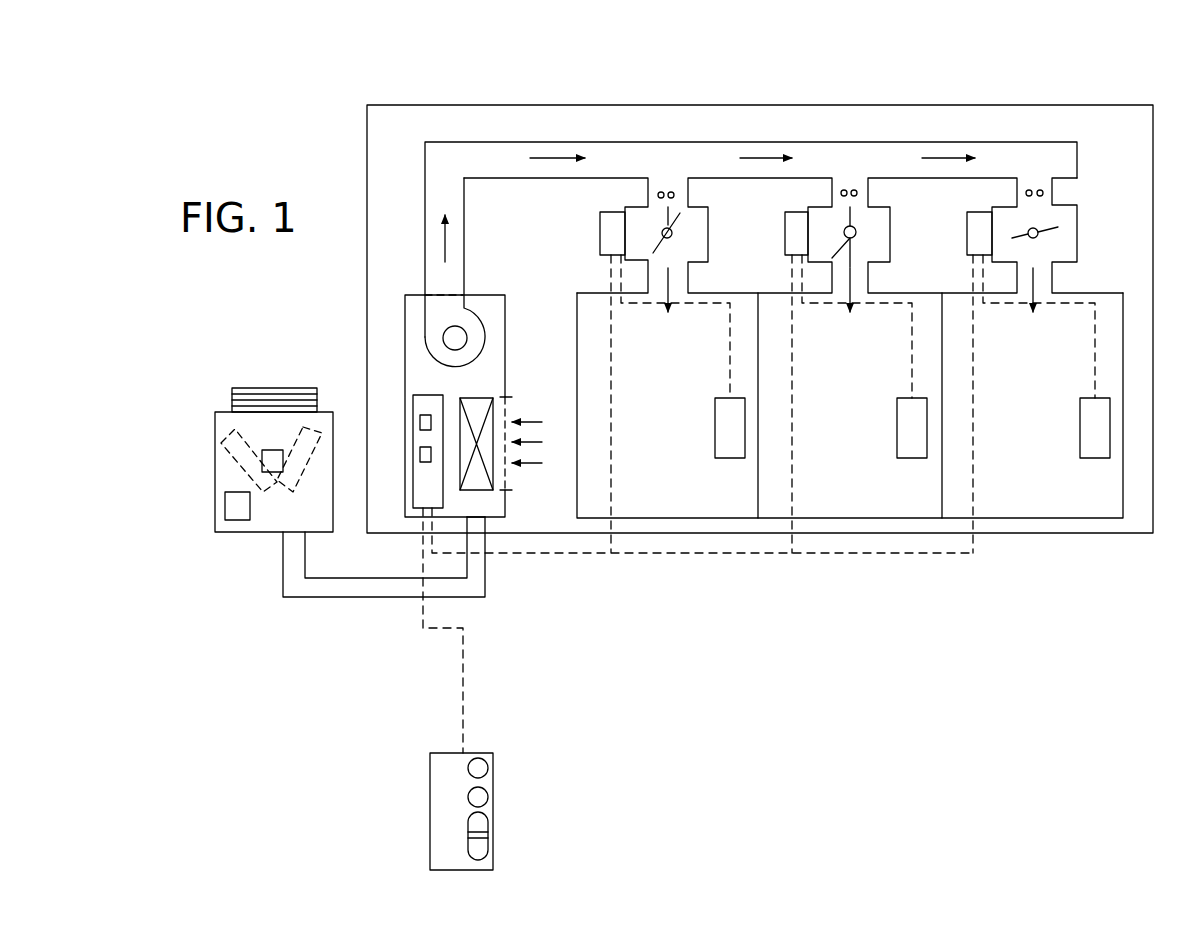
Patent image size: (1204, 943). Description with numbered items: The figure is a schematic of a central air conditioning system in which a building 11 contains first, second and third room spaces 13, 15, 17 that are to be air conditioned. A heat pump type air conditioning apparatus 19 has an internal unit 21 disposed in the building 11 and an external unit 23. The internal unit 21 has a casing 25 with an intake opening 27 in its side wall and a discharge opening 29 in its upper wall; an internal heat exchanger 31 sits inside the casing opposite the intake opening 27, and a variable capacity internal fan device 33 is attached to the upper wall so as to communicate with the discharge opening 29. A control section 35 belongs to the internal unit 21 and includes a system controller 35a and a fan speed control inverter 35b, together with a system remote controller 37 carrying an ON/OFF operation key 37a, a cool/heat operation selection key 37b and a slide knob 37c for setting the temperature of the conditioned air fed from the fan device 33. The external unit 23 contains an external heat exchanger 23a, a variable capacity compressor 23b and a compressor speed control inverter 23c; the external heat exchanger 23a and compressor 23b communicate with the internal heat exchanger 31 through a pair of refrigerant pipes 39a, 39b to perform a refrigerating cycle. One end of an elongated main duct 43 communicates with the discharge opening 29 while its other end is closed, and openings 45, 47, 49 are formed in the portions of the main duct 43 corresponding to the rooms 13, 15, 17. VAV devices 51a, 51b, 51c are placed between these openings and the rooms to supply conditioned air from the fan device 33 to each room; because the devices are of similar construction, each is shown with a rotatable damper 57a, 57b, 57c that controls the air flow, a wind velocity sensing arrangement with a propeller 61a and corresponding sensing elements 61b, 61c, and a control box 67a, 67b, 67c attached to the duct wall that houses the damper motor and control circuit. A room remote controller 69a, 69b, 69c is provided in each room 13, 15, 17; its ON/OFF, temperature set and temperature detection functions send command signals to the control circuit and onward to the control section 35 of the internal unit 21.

The building 11 is at (770, 105).
The first room space 13 is at (693, 500).
The second room space 15 is at (888, 507).
The third room space 17 is at (1063, 497).
The heat pump type air conditioning apparatus 19 is at (290, 607).
The internal unit 21 is at (400, 505).
The external unit 23 is at (215, 457).
The external heat exchanger 23a is at (213, 448).
The variable capacity compressor 23b is at (215, 522).
The compressor speed control inverter 23c is at (263, 450).
The casing 25 is at (507, 329).
The intake opening 27 is at (503, 480).
The discharge opening 29 is at (446, 292).
The internal heat exchanger 31 is at (483, 398).
The variable capacity internal fan device 33 is at (425, 336).
The control section 35 is at (503, 517).
The system controller 35a is at (432, 467).
The fan speed control inverter 35b is at (420, 416).
The system remote controller 37 is at (430, 807).
The ON/OFF key 37a is at (486, 765).
The cool/heat operation selection key 37b is at (488, 794).
The slide knob 37c is at (488, 817).
The refrigerant pipe 39a is at (305, 560).
The refrigerant pipe 39b is at (323, 597).
The main duct 43 is at (494, 140).
The opening 45 is at (668, 180).
The opening 47 is at (850, 178).
The opening 49 is at (1032, 183).
The VAV device 51a is at (690, 205).
The VAV device 51b is at (872, 205).
The VAV device 51c is at (1053, 205).
The damper 57a is at (653, 253).
The second damper 57b is at (832, 258).
The third damper 57c is at (1050, 237).
The propeller 61a is at (657, 195).
The rotational speed detection element 61b is at (841, 193).
The third damper position detector 61c is at (1026, 193).
The control box 67a is at (600, 240).
The second damper actuator 67b is at (785, 252).
The third damper actuator 67c is at (967, 235).
The room remote controller 69a is at (722, 427).
The room remote controller 69b is at (902, 427).
The room remote controller 69c is at (1085, 427).